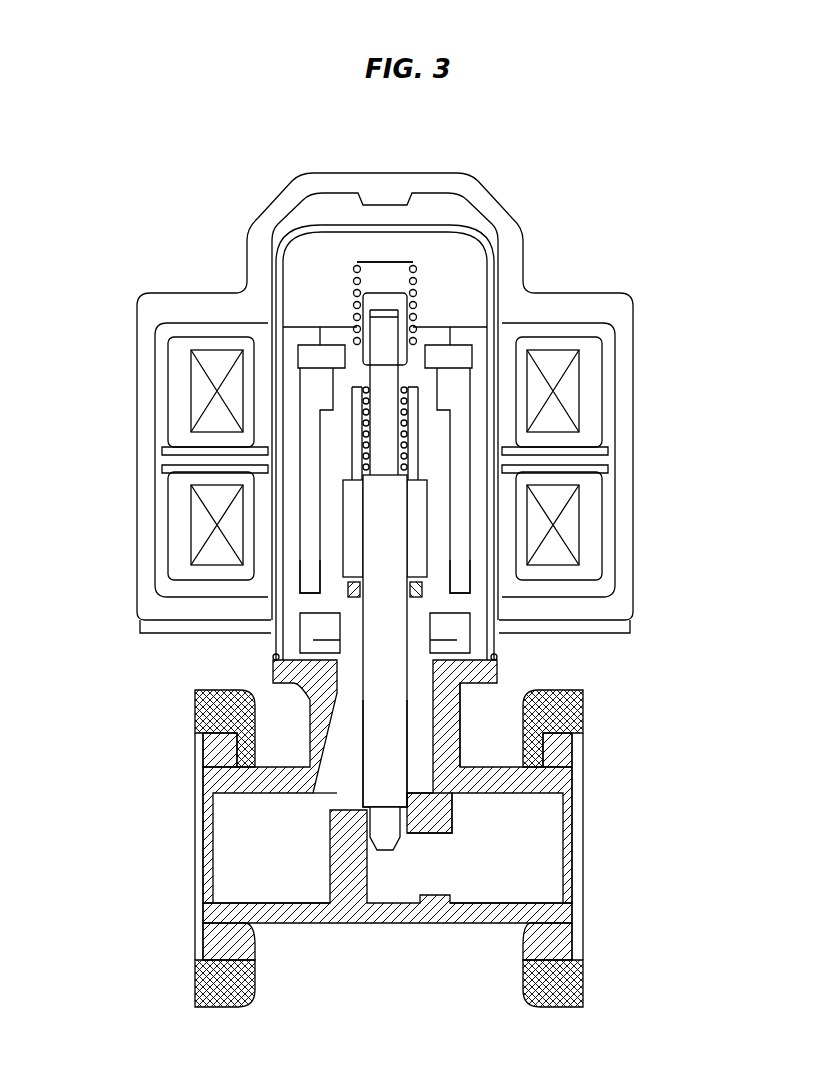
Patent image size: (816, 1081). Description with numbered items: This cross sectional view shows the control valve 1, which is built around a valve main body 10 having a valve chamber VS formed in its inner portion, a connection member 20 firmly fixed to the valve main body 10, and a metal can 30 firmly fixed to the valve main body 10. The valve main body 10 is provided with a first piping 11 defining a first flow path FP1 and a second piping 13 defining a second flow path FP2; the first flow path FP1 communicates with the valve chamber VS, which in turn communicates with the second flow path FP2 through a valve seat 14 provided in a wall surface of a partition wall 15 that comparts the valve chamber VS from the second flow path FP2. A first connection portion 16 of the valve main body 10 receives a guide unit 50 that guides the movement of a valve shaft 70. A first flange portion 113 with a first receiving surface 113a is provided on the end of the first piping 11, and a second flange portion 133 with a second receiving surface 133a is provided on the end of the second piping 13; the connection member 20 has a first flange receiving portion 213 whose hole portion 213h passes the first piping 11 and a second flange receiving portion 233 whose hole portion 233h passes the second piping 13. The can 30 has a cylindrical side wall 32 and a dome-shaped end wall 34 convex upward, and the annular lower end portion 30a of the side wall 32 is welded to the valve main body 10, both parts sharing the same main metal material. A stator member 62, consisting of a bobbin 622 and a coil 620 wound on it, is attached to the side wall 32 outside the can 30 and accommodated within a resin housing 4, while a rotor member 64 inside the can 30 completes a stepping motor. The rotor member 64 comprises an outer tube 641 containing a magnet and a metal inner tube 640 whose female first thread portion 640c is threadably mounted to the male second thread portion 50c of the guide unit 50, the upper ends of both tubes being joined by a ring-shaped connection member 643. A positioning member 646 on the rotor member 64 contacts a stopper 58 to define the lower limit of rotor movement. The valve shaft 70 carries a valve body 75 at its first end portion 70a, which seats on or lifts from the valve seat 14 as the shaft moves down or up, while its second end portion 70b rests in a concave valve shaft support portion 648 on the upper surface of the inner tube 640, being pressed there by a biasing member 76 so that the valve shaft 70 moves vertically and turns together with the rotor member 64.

The control valve 1 is at (62, 254).
The housing 4 is at (200, 302).
The valve main body 10 is at (383, 818).
The first piping 11 is at (277, 922).
The second piping 13 is at (485, 922).
The valve seat 14 is at (365, 817).
The partition wall 15 is at (427, 922).
The first connection portion 16 is at (458, 700).
The connection member 20 is at (217, 1000).
The can 30 is at (505, 640).
The lower end portion 30a is at (500, 657).
The side wall 32 is at (507, 287).
The end wall 34 is at (423, 222).
The guide unit 50 is at (345, 697).
The second thread portion 50c is at (435, 555).
The stopper 58 is at (458, 618).
The stator member 62 is at (457, 460).
The rotor member 64 is at (521, 415).
The valve shaft 70 is at (395, 514).
The first end portion 70a is at (400, 782).
The second end portion 70b is at (413, 302).
The valve body 75 is at (327, 808).
The biasing member 76 is at (360, 430).
The first flange portion 113 is at (213, 947).
The first receiving surface 113a is at (205, 928).
The second flange portion 133 is at (560, 935).
The second receiving surface 133a is at (573, 922).
The first flange receiving portion 213 is at (200, 710).
The hole portion 213h is at (215, 755).
The second flange receiving portion 233 is at (573, 713).
The hole portion 233h is at (540, 772).
The coil 620 is at (560, 412).
The bobbin 622 is at (563, 450).
The inner tube 640 is at (500, 376).
The first thread portion 640c is at (433, 541).
The outer tube 641 is at (418, 385).
The connection member 643 is at (428, 425).
The positioning member 646 is at (457, 573).
The valve shaft support portion 648 is at (465, 358).
The first flow path FP1 is at (227, 872).
The second flow path FP2 is at (550, 857).
The valve chamber VS is at (420, 755).